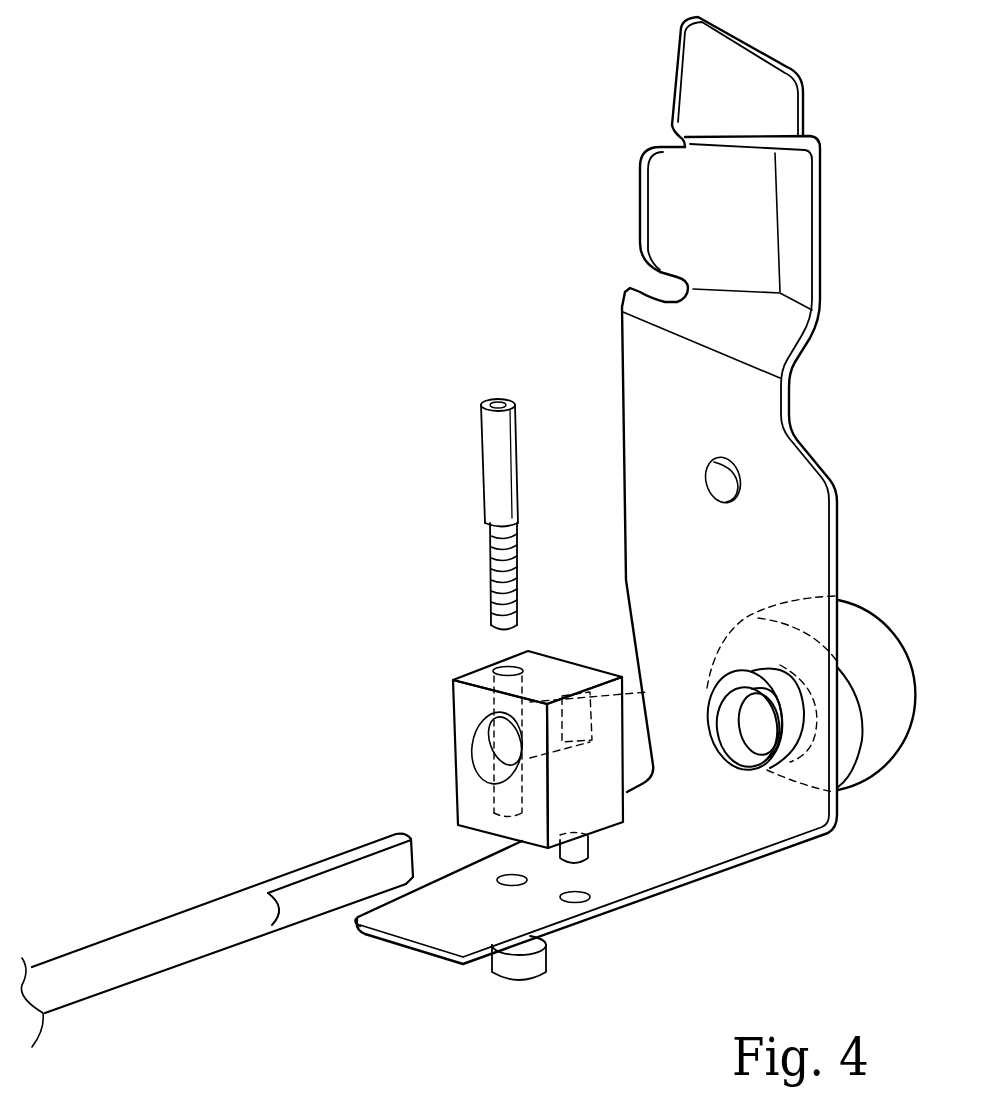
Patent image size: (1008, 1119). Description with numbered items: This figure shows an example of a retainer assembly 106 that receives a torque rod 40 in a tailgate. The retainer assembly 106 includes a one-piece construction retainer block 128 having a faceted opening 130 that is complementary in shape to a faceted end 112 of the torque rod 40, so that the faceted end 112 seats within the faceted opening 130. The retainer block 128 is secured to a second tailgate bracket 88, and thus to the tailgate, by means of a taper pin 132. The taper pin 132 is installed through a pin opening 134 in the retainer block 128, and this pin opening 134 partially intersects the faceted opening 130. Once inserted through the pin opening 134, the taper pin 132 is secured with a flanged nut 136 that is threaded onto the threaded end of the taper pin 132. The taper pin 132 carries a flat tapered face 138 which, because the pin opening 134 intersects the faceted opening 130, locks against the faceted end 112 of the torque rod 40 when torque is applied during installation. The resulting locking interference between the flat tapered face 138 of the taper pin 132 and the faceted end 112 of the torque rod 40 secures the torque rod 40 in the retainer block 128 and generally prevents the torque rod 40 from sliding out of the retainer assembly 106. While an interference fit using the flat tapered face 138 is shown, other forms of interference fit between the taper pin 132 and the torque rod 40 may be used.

The torque rod 40 is at (217, 940).
The second tailgate bracket 88 is at (818, 462).
The retainer assembly 106 is at (427, 650).
The faceted end 112 is at (303, 918).
The retainer block 128 is at (566, 658).
The faceted opening 130 is at (633, 690).
The taper pin 132 is at (484, 451).
The pin opening 134 is at (495, 662).
The flanged nut 136 is at (529, 980).
The flat tapered face 138 is at (500, 397).